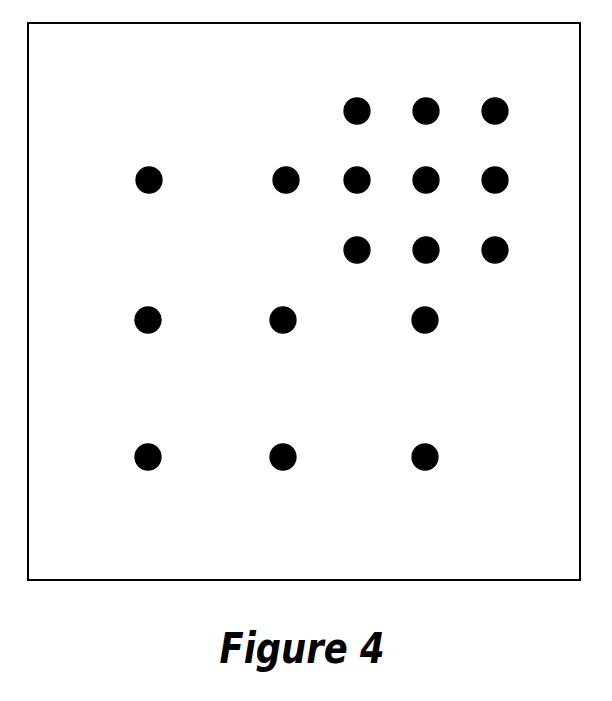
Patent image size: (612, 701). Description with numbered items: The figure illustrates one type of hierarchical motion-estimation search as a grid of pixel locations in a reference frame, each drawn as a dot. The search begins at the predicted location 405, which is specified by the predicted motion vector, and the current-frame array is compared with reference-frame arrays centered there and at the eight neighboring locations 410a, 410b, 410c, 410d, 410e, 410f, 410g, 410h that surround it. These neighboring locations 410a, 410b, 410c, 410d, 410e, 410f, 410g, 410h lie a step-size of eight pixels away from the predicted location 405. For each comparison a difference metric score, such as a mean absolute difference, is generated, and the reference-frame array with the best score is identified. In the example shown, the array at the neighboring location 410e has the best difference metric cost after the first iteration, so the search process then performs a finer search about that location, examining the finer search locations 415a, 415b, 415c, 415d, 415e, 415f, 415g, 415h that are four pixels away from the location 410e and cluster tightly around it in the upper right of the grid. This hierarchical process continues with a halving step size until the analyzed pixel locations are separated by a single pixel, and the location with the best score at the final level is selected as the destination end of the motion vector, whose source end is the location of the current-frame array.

The predicted location 405 is at (273, 335).
The neighboring location 410a is at (133, 481).
The neighboring location 410b is at (270, 481).
The neighboring location 410c is at (410, 481).
The neighboring location 410d is at (410, 335).
The neighboring location 410e is at (412, 194).
The neighboring location 410f is at (273, 194).
The neighboring location 410g is at (135, 194).
The neighboring location 410h is at (133, 335).
The finer search location 415a is at (342, 264).
The finer search location 415b is at (411, 264).
The finer search location 415c is at (480, 264).
The finer search location 415d is at (481, 194).
The finer search location 415e is at (495, 125).
The finer search location 415f is at (426, 125).
The finer search location 415g is at (357, 125).
The finer search location 415h is at (342, 194).